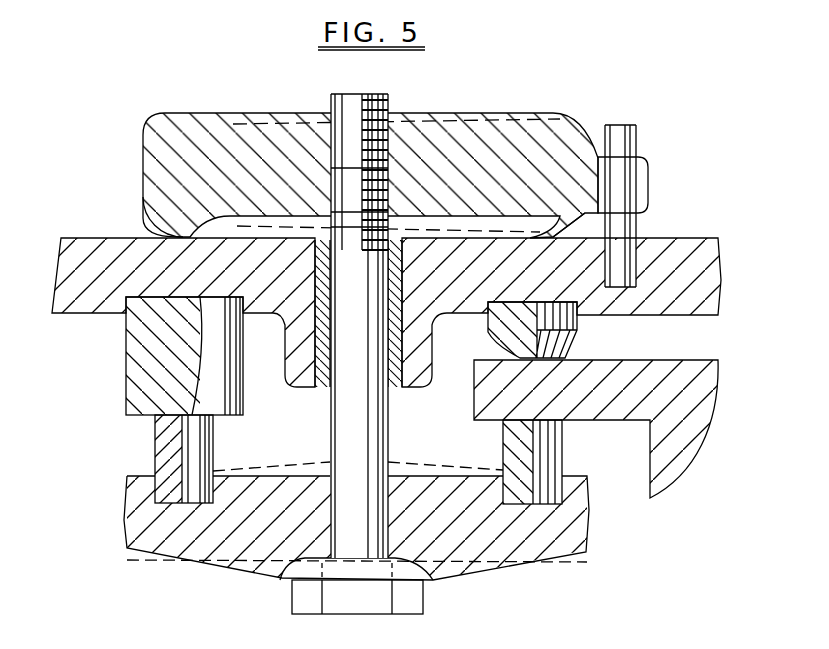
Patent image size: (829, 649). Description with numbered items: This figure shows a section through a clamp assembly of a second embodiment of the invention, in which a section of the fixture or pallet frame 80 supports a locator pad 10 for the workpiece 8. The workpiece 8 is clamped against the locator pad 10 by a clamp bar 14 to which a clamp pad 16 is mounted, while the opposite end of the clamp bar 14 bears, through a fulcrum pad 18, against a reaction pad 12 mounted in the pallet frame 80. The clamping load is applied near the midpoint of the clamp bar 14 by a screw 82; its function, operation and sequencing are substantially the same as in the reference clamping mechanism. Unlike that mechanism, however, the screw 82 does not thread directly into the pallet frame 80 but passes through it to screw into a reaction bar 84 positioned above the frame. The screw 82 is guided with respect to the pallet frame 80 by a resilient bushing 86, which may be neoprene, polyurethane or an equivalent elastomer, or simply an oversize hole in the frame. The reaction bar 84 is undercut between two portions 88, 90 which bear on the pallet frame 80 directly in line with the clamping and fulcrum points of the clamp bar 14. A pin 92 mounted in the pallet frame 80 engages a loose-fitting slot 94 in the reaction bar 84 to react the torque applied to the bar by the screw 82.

The workpiece 8 is at (710, 405).
The locator pad 10 is at (578, 339).
The reaction pad 12 is at (126, 381).
The clamp bar 14 is at (440, 582).
The clamp pad 16 is at (560, 458).
The fulcrum pad 18 is at (155, 456).
The pallet frame 80 is at (720, 283).
The screw 82 is at (390, 450).
The reaction bar 84 is at (142, 146).
The resilient bushing 86 is at (392, 390).
The portion 88 is at (640, 232).
The portion 90 is at (155, 212).
The pin 92 is at (637, 145).
The slot 94 is at (650, 190).